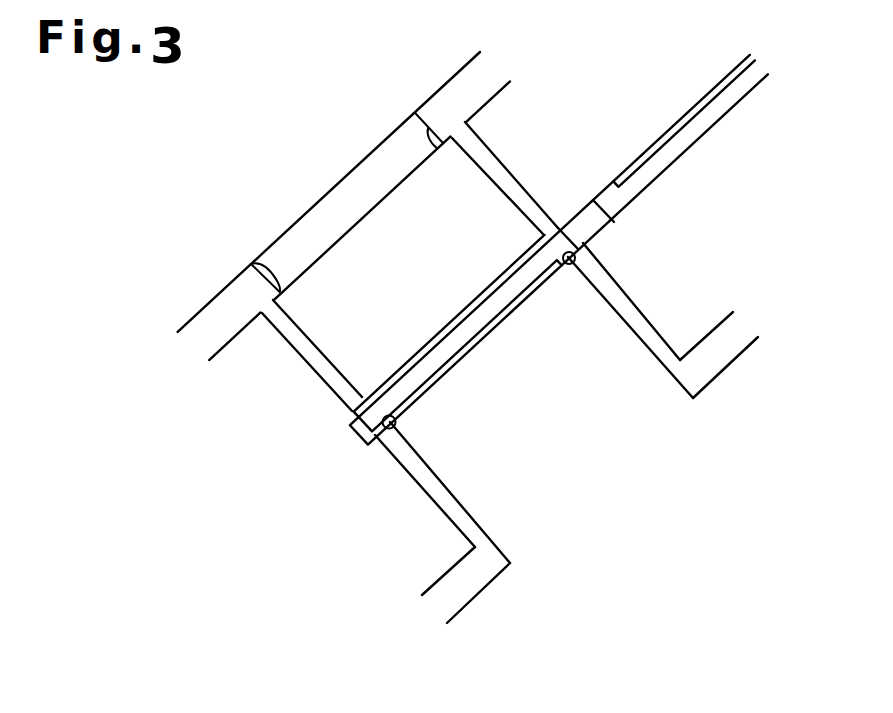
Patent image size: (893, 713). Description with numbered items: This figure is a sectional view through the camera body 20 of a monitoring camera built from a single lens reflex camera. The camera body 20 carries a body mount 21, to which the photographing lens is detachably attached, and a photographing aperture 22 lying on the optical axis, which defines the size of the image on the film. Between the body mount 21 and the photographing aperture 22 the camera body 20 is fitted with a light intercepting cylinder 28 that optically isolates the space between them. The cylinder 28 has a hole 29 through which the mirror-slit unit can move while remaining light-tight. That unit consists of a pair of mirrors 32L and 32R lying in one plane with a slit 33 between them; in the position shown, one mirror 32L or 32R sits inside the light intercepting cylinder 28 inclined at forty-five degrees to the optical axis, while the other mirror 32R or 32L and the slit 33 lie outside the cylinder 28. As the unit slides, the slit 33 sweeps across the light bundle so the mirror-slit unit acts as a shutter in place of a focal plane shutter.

The camera body 20 is at (457, 92).
The body mount 21 is at (415, 122).
The photographing aperture 22 is at (512, 562).
The light intercepting cylinder 28 is at (497, 160).
The hole 29 is at (566, 272).
The mirror 32L is at (470, 308).
The mirror 32R is at (699, 97).
The slit 33 is at (594, 201).